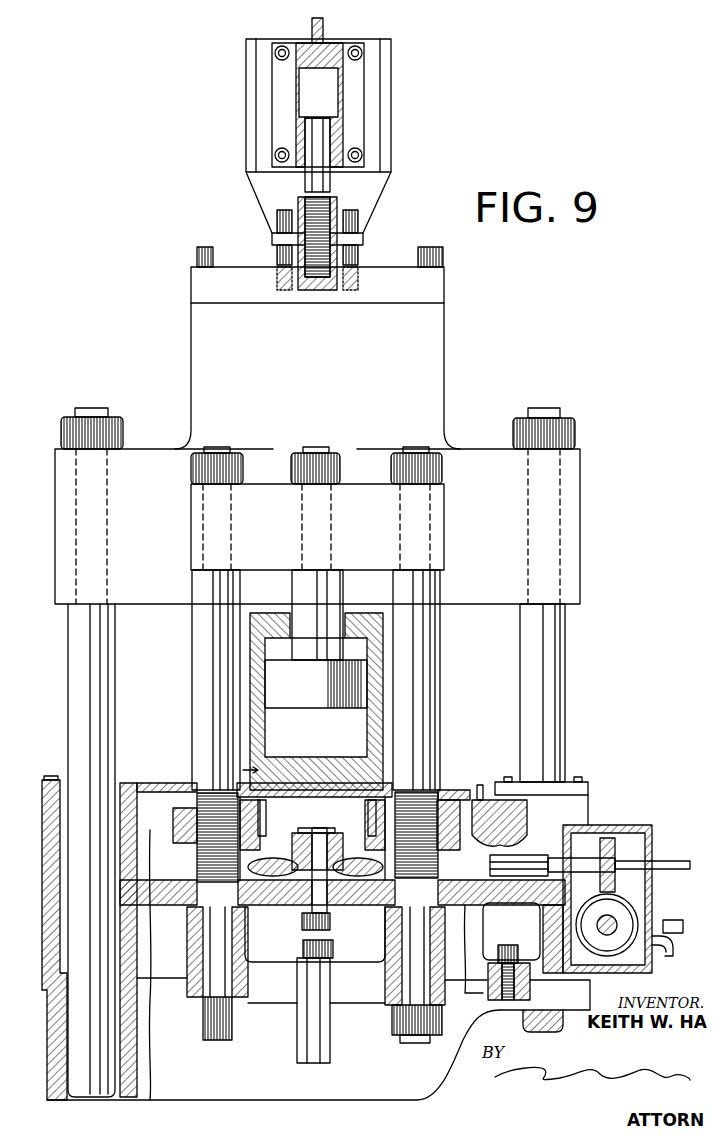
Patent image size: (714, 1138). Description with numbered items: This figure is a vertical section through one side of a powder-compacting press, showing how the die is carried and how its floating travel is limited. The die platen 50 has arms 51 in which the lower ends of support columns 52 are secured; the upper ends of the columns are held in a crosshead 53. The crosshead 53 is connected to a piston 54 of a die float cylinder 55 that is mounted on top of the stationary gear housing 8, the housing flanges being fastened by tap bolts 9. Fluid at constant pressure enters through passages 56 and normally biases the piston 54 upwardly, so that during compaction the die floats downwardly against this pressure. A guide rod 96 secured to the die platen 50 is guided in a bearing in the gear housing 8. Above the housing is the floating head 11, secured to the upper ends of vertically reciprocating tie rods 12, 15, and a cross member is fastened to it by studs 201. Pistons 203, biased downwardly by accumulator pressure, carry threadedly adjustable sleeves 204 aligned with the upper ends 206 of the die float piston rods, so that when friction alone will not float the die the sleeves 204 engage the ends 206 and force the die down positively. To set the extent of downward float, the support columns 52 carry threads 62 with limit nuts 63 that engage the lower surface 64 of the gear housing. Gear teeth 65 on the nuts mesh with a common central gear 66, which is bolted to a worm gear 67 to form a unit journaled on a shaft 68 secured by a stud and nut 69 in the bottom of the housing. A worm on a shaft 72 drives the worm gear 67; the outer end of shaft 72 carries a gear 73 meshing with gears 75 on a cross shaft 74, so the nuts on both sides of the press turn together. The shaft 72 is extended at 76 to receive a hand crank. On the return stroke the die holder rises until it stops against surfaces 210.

The stationary gear housing 8 is at (602, 797).
The tap bolts 9 is at (508, 945).
The floating head 11 is at (432, 362).
The tie rod 12 is at (102, 665).
The tie rod 15 is at (555, 657).
The die platen 50 is at (270, 1003).
The arms 51 is at (190, 996).
The support columns 52 is at (192, 712).
The crossheads 53 is at (360, 484).
The pistons 54 is at (316, 684).
The die float cylinders 55 is at (382, 670).
The passages 56 is at (278, 762).
The threads 62 is at (212, 800).
The limit nuts 63 is at (266, 812).
The lower surface of the gear housing 64 is at (152, 880).
The gear teeth 65 is at (173, 822).
The central gear 66 is at (270, 860).
The worm gear 67 is at (362, 860).
The shaft 68 is at (312, 828).
The stud and nut 69 is at (332, 922).
The shaft 72 is at (492, 861).
The gear 73 is at (608, 838).
The cross shaft 74 is at (615, 920).
The gears 75 is at (643, 918).
The shaft extension 76 is at (672, 861).
The guide rod 96 is at (335, 1040).
The studs 201 is at (362, 224).
The pistons 203 is at (305, 128).
The sleeves 204 is at (315, 292).
The upper ends of the piston rods 206 is at (318, 453).
The surfaces 210 is at (195, 917).